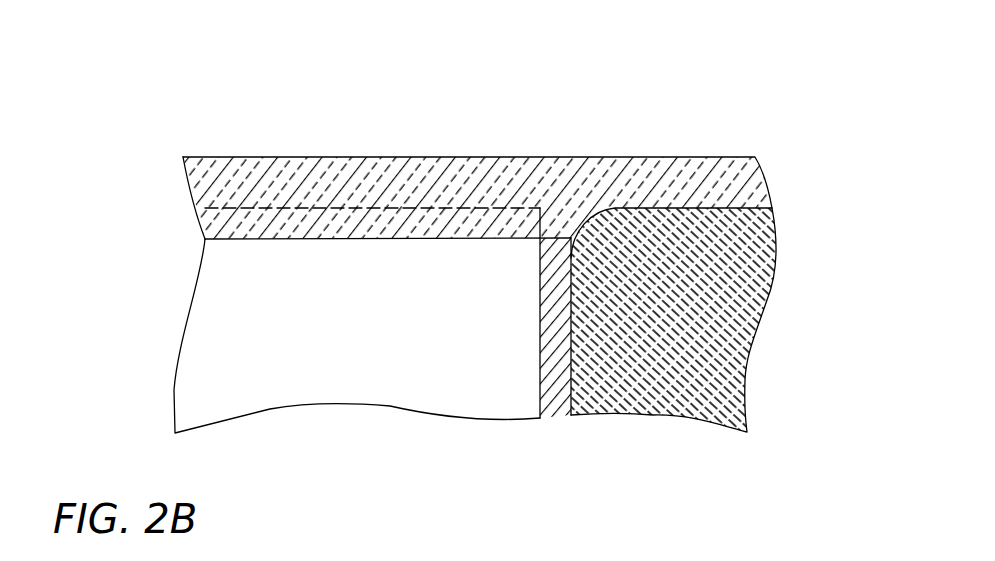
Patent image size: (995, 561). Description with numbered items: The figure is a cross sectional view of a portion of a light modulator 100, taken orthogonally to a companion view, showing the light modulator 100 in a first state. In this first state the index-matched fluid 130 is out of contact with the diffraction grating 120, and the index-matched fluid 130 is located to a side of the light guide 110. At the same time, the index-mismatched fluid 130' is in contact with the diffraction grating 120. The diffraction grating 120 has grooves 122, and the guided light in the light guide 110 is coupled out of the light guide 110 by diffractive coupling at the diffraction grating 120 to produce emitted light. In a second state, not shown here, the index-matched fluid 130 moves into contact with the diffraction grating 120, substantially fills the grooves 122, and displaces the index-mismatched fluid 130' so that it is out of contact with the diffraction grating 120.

The light modulator 100 is at (747, 85).
The light guide 110 is at (377, 341).
The diffraction grating 120 is at (428, 148).
The grooves 122 is at (197, 223).
The index-matched fluid 130 is at (696, 320).
The index-mismatched fluid 130' is at (372, 162).